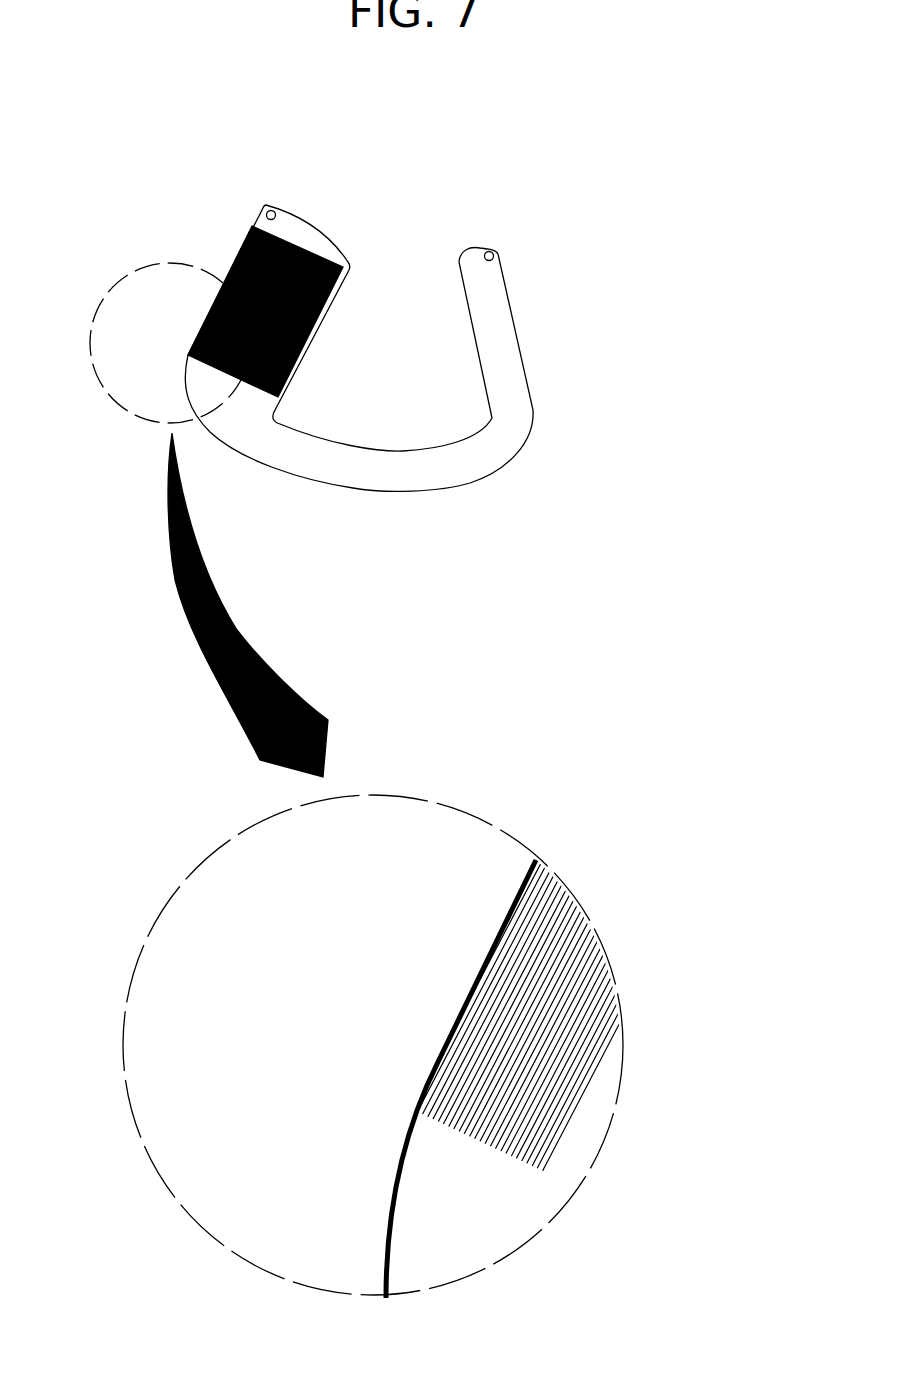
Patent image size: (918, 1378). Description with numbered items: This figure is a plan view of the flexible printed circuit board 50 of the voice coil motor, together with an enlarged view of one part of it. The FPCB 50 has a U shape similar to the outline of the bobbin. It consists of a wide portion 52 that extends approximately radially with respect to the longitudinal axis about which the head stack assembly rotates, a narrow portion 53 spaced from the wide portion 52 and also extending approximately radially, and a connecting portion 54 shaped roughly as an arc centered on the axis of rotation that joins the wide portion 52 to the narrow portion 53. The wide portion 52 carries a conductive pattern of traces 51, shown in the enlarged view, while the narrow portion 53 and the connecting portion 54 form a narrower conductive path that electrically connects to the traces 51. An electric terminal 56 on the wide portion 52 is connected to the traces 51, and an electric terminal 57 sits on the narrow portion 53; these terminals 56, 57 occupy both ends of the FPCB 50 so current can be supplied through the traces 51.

The flexible printed circuit board 50 is at (386, 697).
The conductive pattern of traces 51 is at (242, 257).
The wide portion 52 is at (210, 311).
The narrow portion 53 is at (505, 363).
The connecting portion 54 is at (388, 460).
The electric terminal 56 is at (275, 213).
The electric terminal 57 is at (496, 252).